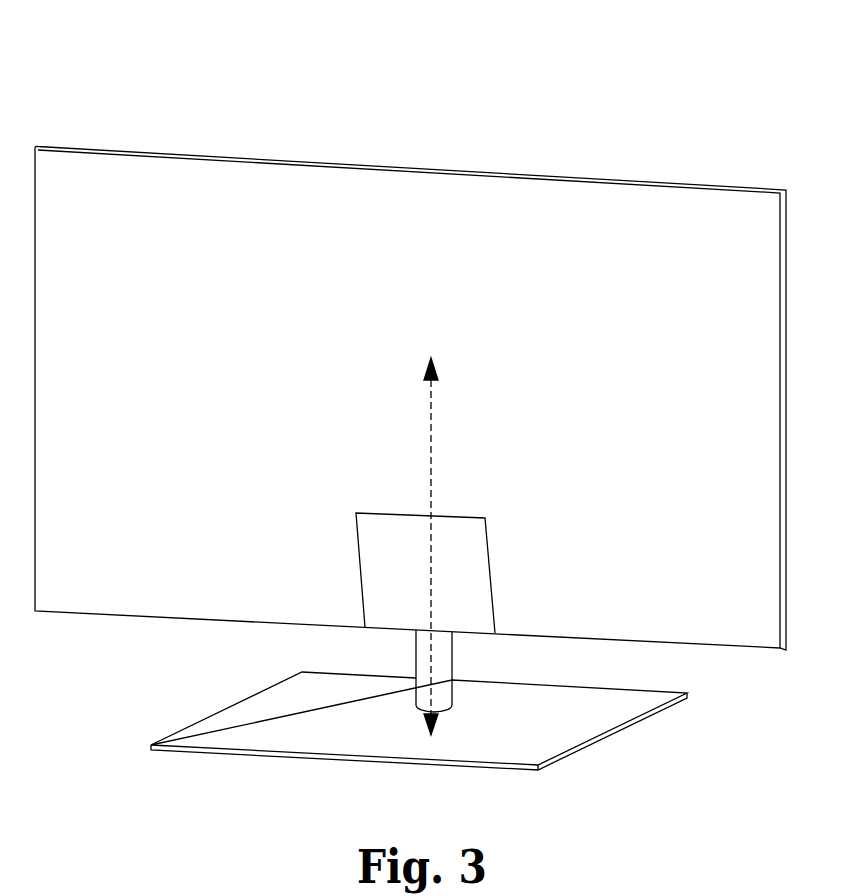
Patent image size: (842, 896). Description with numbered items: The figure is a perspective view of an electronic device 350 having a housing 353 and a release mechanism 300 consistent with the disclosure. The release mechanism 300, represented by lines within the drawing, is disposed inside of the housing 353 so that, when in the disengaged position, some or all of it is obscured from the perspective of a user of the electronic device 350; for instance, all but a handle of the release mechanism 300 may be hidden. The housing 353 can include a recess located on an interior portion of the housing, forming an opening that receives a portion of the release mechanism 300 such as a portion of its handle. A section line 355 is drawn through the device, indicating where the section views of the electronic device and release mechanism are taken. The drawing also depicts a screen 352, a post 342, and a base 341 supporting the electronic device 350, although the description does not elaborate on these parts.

The electronic device 350 is at (220, 68).
The display screen 352 is at (553, 177).
The housing 353 is at (455, 195).
The section line 355 is at (450, 539).
The release mechanism 300 is at (368, 512).
The stand post 342 is at (434, 657).
The stand base 341 is at (628, 728).